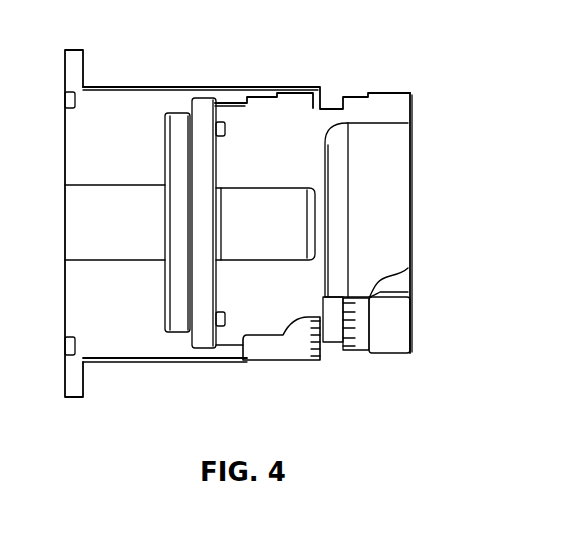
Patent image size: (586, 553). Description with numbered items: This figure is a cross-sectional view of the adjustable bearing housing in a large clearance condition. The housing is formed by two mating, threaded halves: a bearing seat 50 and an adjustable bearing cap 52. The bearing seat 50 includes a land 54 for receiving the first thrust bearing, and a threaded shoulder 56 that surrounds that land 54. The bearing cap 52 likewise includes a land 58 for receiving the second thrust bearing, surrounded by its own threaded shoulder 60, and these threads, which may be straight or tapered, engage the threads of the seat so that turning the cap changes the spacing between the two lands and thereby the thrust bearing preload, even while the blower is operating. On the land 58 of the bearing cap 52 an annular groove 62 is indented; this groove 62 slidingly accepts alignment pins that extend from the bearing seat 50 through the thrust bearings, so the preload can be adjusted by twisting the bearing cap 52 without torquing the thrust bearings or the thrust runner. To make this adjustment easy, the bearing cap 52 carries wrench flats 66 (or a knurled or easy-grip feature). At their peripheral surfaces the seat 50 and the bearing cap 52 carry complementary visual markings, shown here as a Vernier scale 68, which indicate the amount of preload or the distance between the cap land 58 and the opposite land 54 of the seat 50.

The bearing seat 50 is at (133, 85).
The bearing cap 52 is at (390, 93).
The land 54 is at (165, 283).
The threaded shoulder 56 is at (288, 363).
The land 58 is at (215, 112).
The threaded shoulder 60 is at (285, 110).
The annular groove 62 is at (224, 318).
The wrench flats 66 is at (402, 332).
The Vernier scale 68 is at (332, 362).